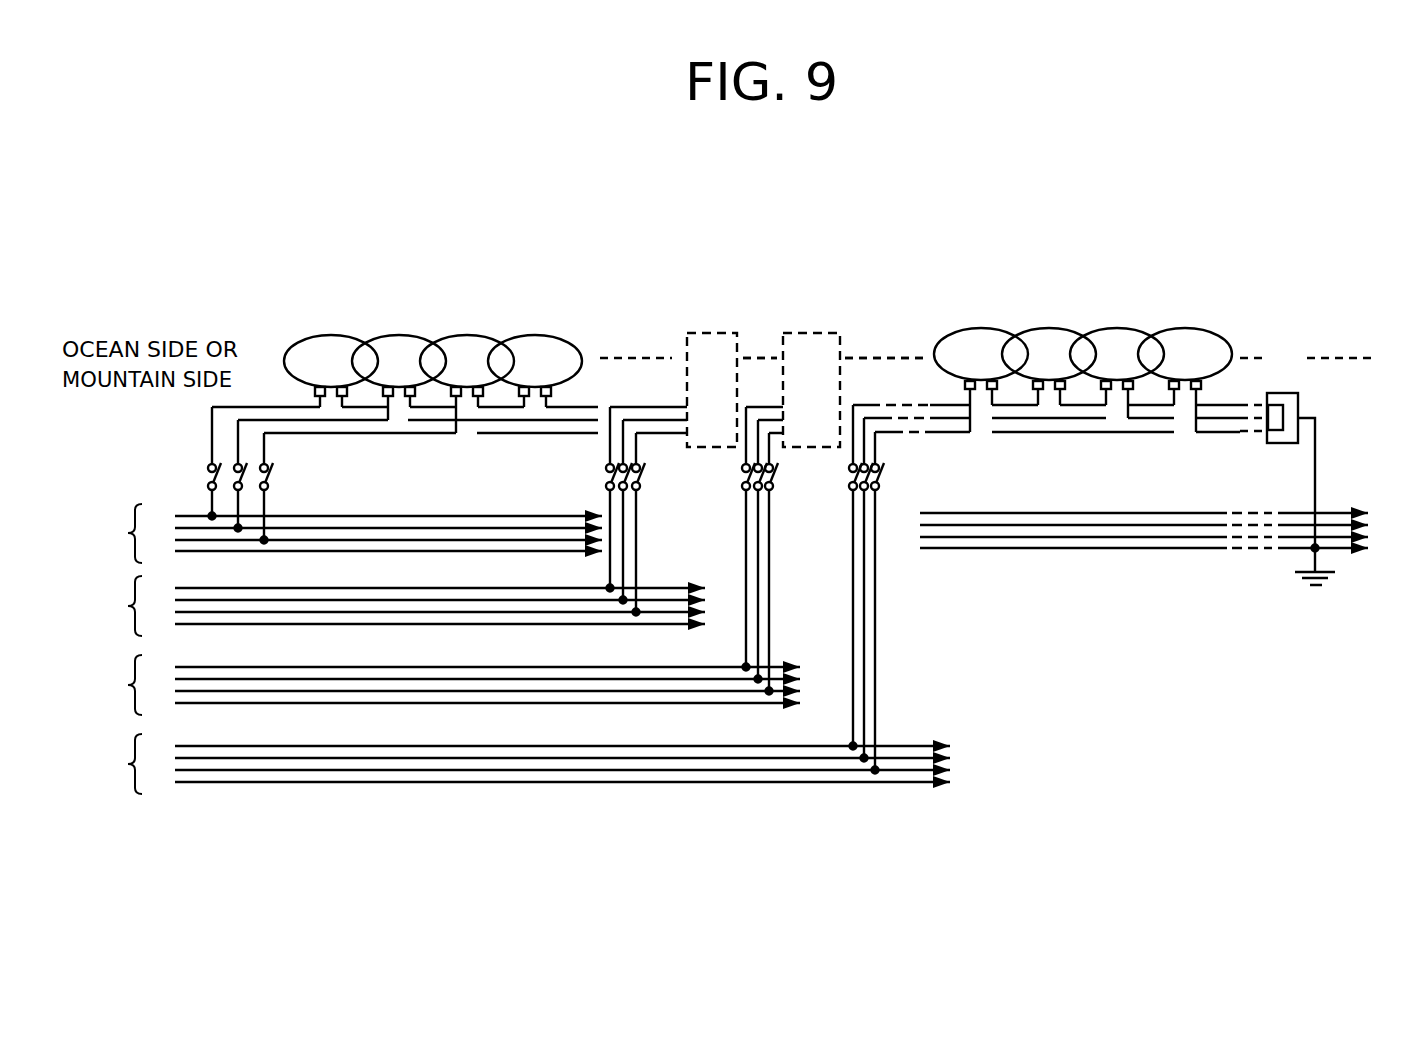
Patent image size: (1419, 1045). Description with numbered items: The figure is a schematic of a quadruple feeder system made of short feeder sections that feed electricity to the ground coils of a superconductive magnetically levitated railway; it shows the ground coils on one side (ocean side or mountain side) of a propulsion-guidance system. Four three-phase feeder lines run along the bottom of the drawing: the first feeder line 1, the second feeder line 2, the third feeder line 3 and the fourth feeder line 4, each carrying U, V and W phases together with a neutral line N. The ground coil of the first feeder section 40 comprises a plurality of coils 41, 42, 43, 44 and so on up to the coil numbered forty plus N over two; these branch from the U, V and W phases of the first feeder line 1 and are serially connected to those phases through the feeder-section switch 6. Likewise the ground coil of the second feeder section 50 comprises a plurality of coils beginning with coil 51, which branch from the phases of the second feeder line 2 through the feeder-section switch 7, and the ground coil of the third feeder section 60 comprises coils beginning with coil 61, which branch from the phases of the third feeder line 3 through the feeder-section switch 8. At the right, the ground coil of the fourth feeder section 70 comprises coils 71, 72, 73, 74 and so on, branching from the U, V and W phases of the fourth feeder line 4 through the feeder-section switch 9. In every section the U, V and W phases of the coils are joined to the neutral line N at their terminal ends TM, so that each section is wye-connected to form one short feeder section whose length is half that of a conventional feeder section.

The first feeder line 1 is at (351, 533).
The second feeder line 2 is at (401, 606).
The third feeder line 3 is at (449, 685).
The fourth feeder line 4 is at (523, 764).
The feeder-section switch 6 is at (198, 474).
The feeder-section switch 7 is at (600, 477).
The feeder-section switch 8 is at (738, 483).
The feeder-section switch 9 is at (845, 483).
The ground coil of the first feeder section 40 is at (292, 304).
The coil 41 is at (348, 335).
The coil 42 is at (416, 335).
The coil 43 is at (486, 335).
The coil 44 is at (552, 335).
The ground coil of the second feeder section 50 is at (705, 327).
The coil 51 is at (757, 342).
The ground coil of the third feeder section 60 is at (805, 327).
The coil 61 is at (866, 342).
The ground coil of the fourth feeder section 70 is at (930, 323).
The coil 71 is at (992, 328).
The coil 72 is at (1070, 328).
The coil 73 is at (1135, 328).
The coil 74 is at (1213, 330).
The terminal end TM is at (1300, 406).